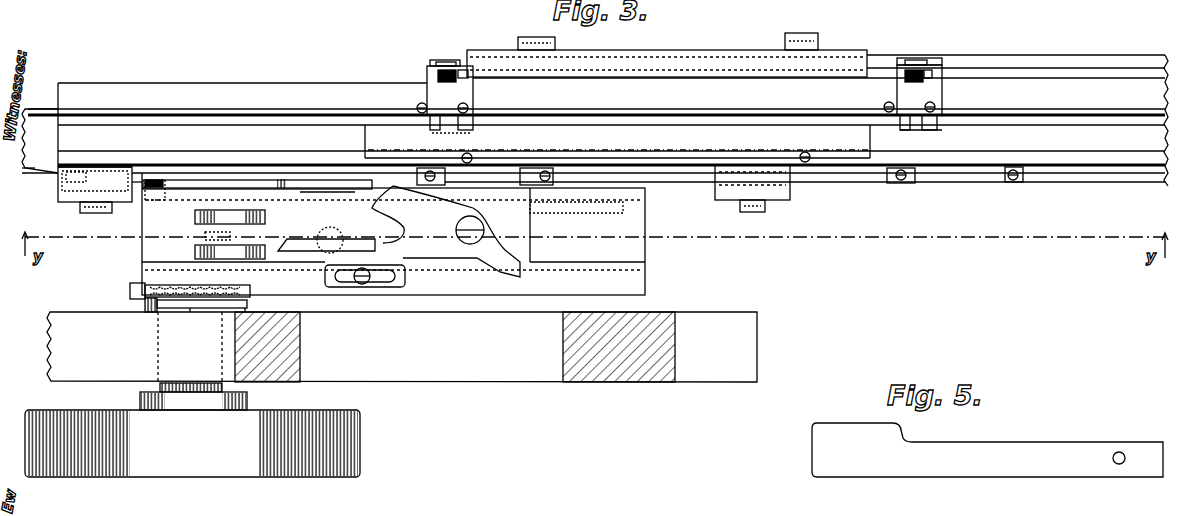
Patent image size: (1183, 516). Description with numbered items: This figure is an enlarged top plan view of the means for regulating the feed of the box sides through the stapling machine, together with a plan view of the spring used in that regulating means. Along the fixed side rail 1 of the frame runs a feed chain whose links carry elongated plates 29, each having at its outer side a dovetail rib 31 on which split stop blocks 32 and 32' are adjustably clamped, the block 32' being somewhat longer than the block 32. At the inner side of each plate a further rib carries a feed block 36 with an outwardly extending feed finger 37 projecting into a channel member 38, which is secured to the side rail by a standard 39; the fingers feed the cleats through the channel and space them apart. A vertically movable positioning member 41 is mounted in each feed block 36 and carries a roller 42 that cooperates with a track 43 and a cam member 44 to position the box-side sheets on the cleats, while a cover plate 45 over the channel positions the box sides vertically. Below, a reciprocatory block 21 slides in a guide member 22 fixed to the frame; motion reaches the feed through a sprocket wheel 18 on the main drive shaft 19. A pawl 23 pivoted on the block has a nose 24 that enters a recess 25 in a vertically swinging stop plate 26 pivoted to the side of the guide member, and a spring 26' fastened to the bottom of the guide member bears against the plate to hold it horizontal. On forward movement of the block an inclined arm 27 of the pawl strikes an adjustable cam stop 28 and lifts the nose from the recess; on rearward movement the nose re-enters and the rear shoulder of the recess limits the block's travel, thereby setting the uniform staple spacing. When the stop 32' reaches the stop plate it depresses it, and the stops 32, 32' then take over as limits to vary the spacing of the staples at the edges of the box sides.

In FIG. 3, the side rail 1 is at (247, 92).
In FIG. 3, the sprocket wheel 18 is at (128, 292).
In FIG. 3, the main drive shaft 19 is at (207, 390).
In FIG. 3, the reciprocatory block 21 is at (513, 224).
In FIG. 3, the guide member 22 is at (645, 280).
In FIG. 3, the pawl 23 is at (446, 231).
In FIG. 3, the nose 24 is at (326, 235).
In FIG. 3, the recess 25 is at (340, 190).
In FIG. 3, the stop plate 26 is at (257, 160).
In FIG. 5, the spring 26' is at (987, 467).
In FIG. 3, the inclined arm 27 is at (507, 259).
In FIG. 3, the cam stop 28 is at (398, 272).
In FIG. 3, the elongated plate 29 is at (40, 141).
In FIG. 3, the dovetail rib 31 is at (33, 176).
In FIG. 3, the split stop block 32 is at (771, 197).
In FIG. 3, the split stop block 32' is at (662, 199).
In FIG. 3, the feed block 36 is at (679, 95).
In FIG. 3, the feed finger 37 is at (920, 130).
In FIG. 3, the channel member 38 is at (649, 140).
In FIG. 3, the standard 39 is at (40, 109).
In FIG. 3, the positioning member 41 is at (466, 75).
In FIG. 3, the roller 42 is at (449, 61).
In FIG. 3, the track 43 is at (1028, 64).
In FIG. 3, the cam member 44 is at (693, 63).
In FIG. 3, the cover plate 45 is at (617, 144).